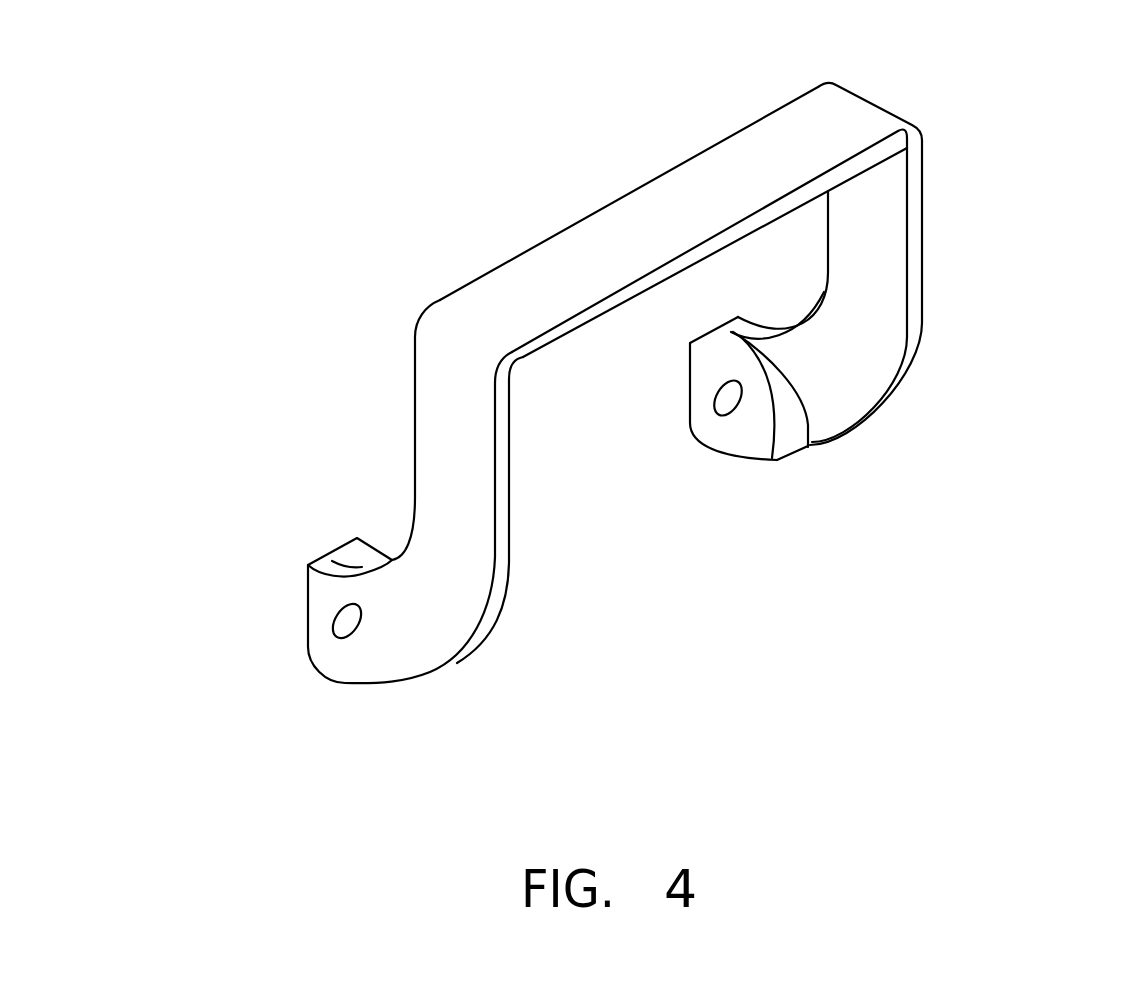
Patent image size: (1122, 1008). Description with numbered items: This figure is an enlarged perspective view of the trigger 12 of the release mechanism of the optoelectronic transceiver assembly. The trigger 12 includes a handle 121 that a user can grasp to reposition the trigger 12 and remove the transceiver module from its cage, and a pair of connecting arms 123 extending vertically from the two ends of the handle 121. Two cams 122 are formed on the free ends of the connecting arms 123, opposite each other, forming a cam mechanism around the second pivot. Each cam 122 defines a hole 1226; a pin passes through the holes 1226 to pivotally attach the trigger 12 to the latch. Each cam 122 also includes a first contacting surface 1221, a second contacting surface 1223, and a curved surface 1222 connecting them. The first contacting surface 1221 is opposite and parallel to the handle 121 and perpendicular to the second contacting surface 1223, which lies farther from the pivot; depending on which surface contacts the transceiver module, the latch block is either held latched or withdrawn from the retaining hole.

The trigger 12 is at (965, 82).
The handle 121 is at (718, 183).
The cam 122 is at (358, 557).
The connecting arm 123 is at (883, 233).
The first contacting surface 1221 is at (735, 350).
The curved surface 1222 is at (786, 392).
The second contacting surface 1223 is at (788, 435).
The hole 1226 is at (338, 620).